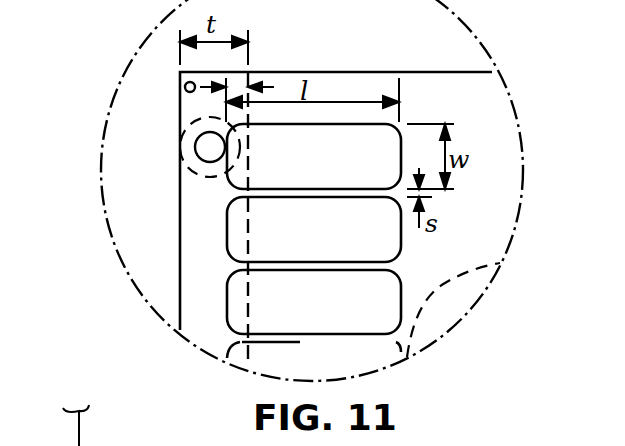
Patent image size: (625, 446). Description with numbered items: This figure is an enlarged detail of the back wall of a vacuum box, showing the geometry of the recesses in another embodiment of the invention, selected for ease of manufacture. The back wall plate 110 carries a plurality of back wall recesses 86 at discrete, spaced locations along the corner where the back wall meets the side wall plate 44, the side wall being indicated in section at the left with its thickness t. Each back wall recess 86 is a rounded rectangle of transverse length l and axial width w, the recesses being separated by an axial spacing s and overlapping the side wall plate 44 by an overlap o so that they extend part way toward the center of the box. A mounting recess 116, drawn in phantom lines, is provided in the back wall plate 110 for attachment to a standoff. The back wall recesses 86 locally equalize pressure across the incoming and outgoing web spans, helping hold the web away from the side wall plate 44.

The side wall plate 44 is at (200, 208).
The back wall recess 86 is at (243, 234).
The back wall plate 110 is at (438, 72).
The mounting recess 116 is at (447, 285).